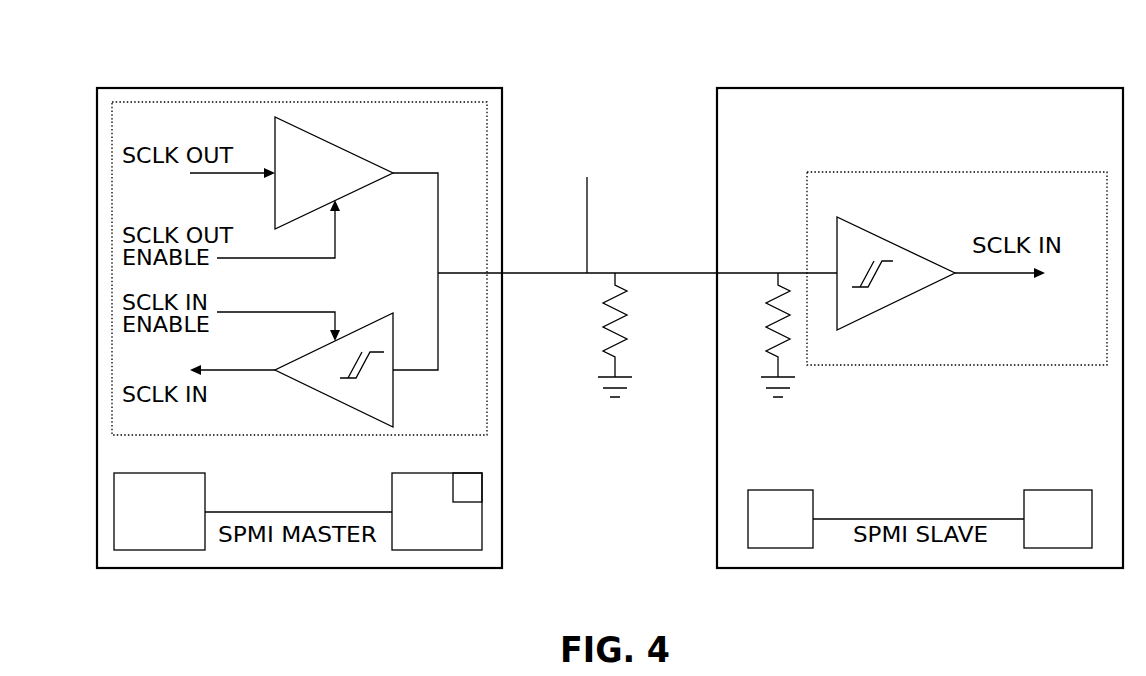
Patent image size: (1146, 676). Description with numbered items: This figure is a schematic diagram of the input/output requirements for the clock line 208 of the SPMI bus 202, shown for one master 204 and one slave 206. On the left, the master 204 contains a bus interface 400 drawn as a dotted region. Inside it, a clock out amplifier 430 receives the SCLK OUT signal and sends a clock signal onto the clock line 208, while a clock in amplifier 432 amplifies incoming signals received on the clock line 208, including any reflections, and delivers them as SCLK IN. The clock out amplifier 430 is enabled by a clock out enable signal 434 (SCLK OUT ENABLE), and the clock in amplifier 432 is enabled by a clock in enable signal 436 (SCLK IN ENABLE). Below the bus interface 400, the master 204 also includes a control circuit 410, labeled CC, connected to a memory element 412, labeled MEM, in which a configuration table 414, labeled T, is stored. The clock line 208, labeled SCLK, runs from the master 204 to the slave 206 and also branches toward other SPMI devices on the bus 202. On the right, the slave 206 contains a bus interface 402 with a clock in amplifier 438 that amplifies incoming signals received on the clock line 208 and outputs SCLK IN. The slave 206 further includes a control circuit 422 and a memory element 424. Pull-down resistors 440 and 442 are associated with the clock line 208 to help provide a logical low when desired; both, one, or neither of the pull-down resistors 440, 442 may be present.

The SPMI bus 202 is at (601, 76).
The master 204 is at (310, 88).
The slave 206 is at (932, 88).
The clock line 208 is at (535, 275).
The bus interface 400 is at (437, 102).
The bus interface 402 is at (1065, 172).
The control circuit 410 is at (158, 550).
The memory element 412 is at (482, 535).
The configuration table 414 is at (482, 488).
The control circuit 422 is at (1055, 548).
The memory element 424 is at (783, 548).
The clock out amplifier 430 is at (335, 143).
The clock in amplifier 432 is at (322, 397).
The clock out enable signal 434 is at (336, 258).
The clock in enable signal 436 is at (269, 311).
The clock in amplifier 438 is at (907, 298).
The pull-down resistor 440 is at (619, 356).
The pull-down resistor 442 is at (771, 347).